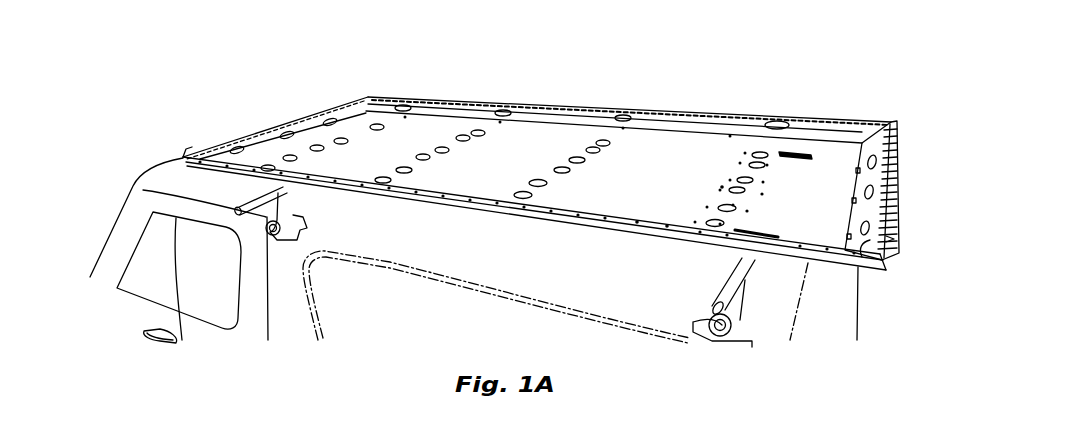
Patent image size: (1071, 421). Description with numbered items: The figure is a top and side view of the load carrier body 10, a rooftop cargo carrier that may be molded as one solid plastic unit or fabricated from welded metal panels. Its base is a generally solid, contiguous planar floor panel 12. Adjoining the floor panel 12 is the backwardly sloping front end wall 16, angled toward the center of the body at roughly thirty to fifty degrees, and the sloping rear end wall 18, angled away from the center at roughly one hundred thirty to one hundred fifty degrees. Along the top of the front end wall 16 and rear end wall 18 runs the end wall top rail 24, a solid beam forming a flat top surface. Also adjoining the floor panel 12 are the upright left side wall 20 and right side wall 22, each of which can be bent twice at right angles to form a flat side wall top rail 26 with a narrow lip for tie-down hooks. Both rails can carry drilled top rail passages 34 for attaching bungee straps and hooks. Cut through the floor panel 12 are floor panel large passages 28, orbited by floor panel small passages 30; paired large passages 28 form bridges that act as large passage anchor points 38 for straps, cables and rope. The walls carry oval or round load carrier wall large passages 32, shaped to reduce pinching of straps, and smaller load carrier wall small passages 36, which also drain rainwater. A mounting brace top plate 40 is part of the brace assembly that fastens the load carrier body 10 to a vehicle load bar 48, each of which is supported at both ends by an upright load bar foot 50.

The load carrier body 10 is at (384, 215).
The floor panel 12 is at (512, 169).
The front end wall 16 is at (263, 137).
The rear end wall 18 is at (860, 268).
The left side wall 20 is at (548, 222).
The right side wall 22 is at (458, 107).
The end wall top rail 24 is at (220, 146).
The side wall top rail 26 is at (442, 100).
The floor panel large passages 28 is at (557, 167).
The floor panel small passages 30 is at (747, 211).
The load carrier wall large passages 32 is at (503, 110).
The top rail passages 34 is at (667, 223).
The load carrier wall small passages 36 is at (772, 136).
The large passage anchor points 38 is at (722, 187).
The mounting brace top plate 40 is at (797, 152).
The vehicle load bar 48 is at (254, 199).
The load bar foot 50 is at (303, 226).